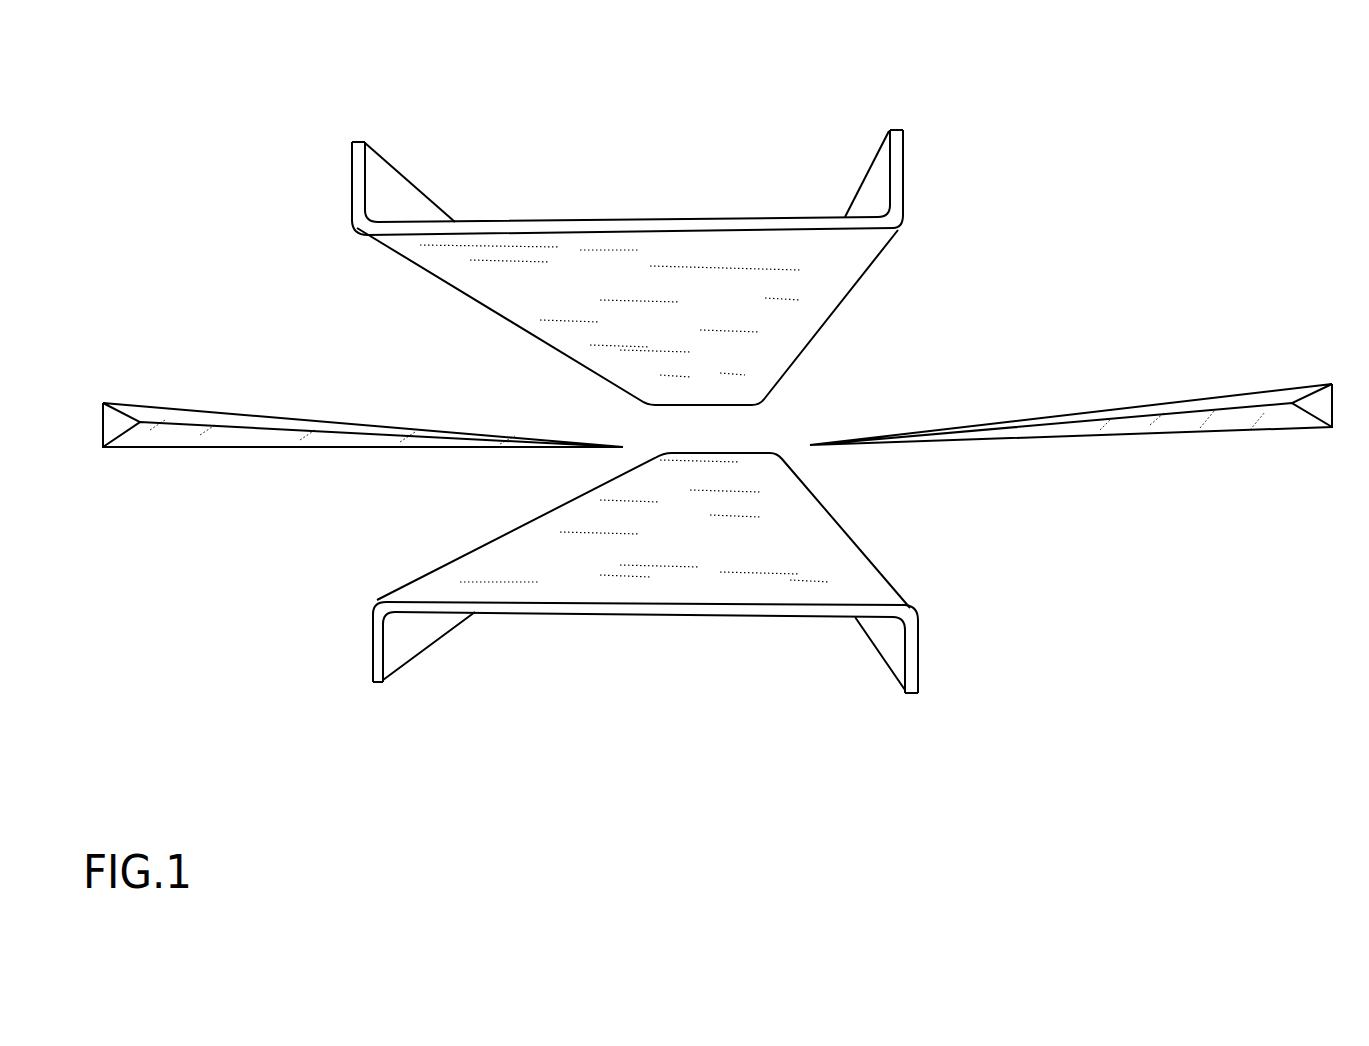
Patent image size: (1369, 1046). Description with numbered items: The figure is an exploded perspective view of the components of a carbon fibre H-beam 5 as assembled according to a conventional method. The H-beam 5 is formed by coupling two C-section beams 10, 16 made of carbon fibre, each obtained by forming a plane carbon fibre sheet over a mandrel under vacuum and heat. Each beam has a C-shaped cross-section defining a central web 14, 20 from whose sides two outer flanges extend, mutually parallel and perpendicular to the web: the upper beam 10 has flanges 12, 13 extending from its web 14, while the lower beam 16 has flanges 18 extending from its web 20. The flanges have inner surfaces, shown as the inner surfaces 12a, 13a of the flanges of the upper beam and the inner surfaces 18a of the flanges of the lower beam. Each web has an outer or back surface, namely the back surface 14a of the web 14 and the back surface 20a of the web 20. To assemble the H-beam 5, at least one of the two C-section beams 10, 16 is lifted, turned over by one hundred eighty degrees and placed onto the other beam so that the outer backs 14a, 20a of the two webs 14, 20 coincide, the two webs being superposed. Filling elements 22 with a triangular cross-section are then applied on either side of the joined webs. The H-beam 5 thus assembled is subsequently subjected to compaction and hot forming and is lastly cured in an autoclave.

The H-beam 5 is at (1253, 448).
The C-section beam 10 is at (919, 207).
The outer flange 12 is at (352, 180).
The inner surface 12a is at (395, 188).
The outer flange 13 is at (895, 155).
The inner surface 13a is at (875, 190).
The web 14 is at (638, 218).
The outer surface 14a is at (830, 272).
The C-section beam 16 is at (365, 591).
The outer flange 18 is at (377, 660).
The inner surface 18a is at (420, 630).
The web 20 is at (680, 617).
The outer surface 20a is at (818, 555).
The filling element 22 is at (220, 407).